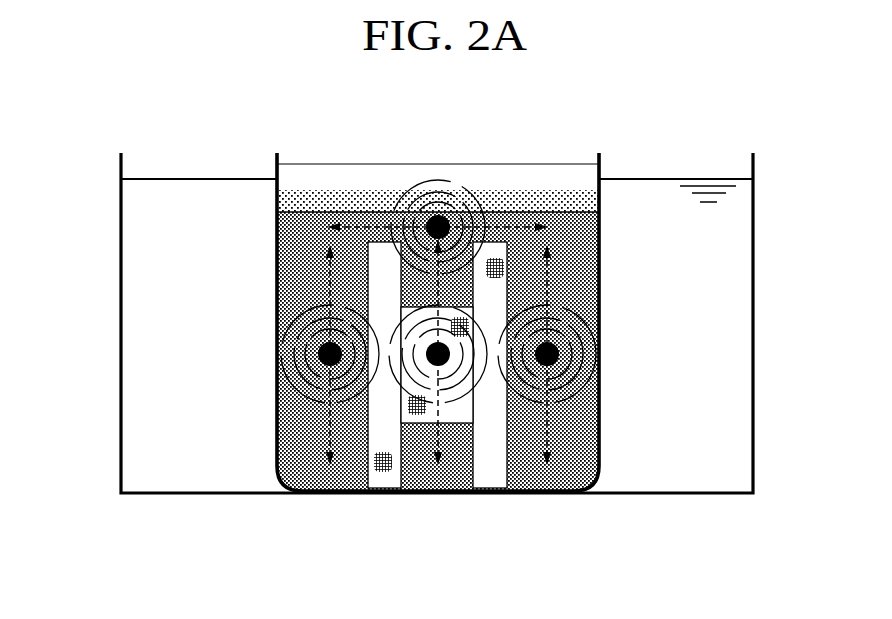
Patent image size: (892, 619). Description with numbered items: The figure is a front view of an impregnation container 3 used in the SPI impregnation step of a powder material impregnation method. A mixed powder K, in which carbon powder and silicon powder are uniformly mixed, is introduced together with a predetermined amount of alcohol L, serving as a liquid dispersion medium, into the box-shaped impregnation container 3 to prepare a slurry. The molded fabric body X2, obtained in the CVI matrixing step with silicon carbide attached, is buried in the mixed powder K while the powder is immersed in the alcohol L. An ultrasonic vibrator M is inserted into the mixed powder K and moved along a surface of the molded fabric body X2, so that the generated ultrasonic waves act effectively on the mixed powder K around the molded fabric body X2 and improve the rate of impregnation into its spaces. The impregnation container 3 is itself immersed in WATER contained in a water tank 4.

The impregnation container 3 is at (404, 330).
The water tank 4 is at (121, 330).
The water WATER is at (180, 179).
The alcohol L is at (552, 196).
The mixed powder K is at (438, 351).
The ultrasonic vibrator M is at (427, 214).
The molded fabric body X2 is at (363, 470).